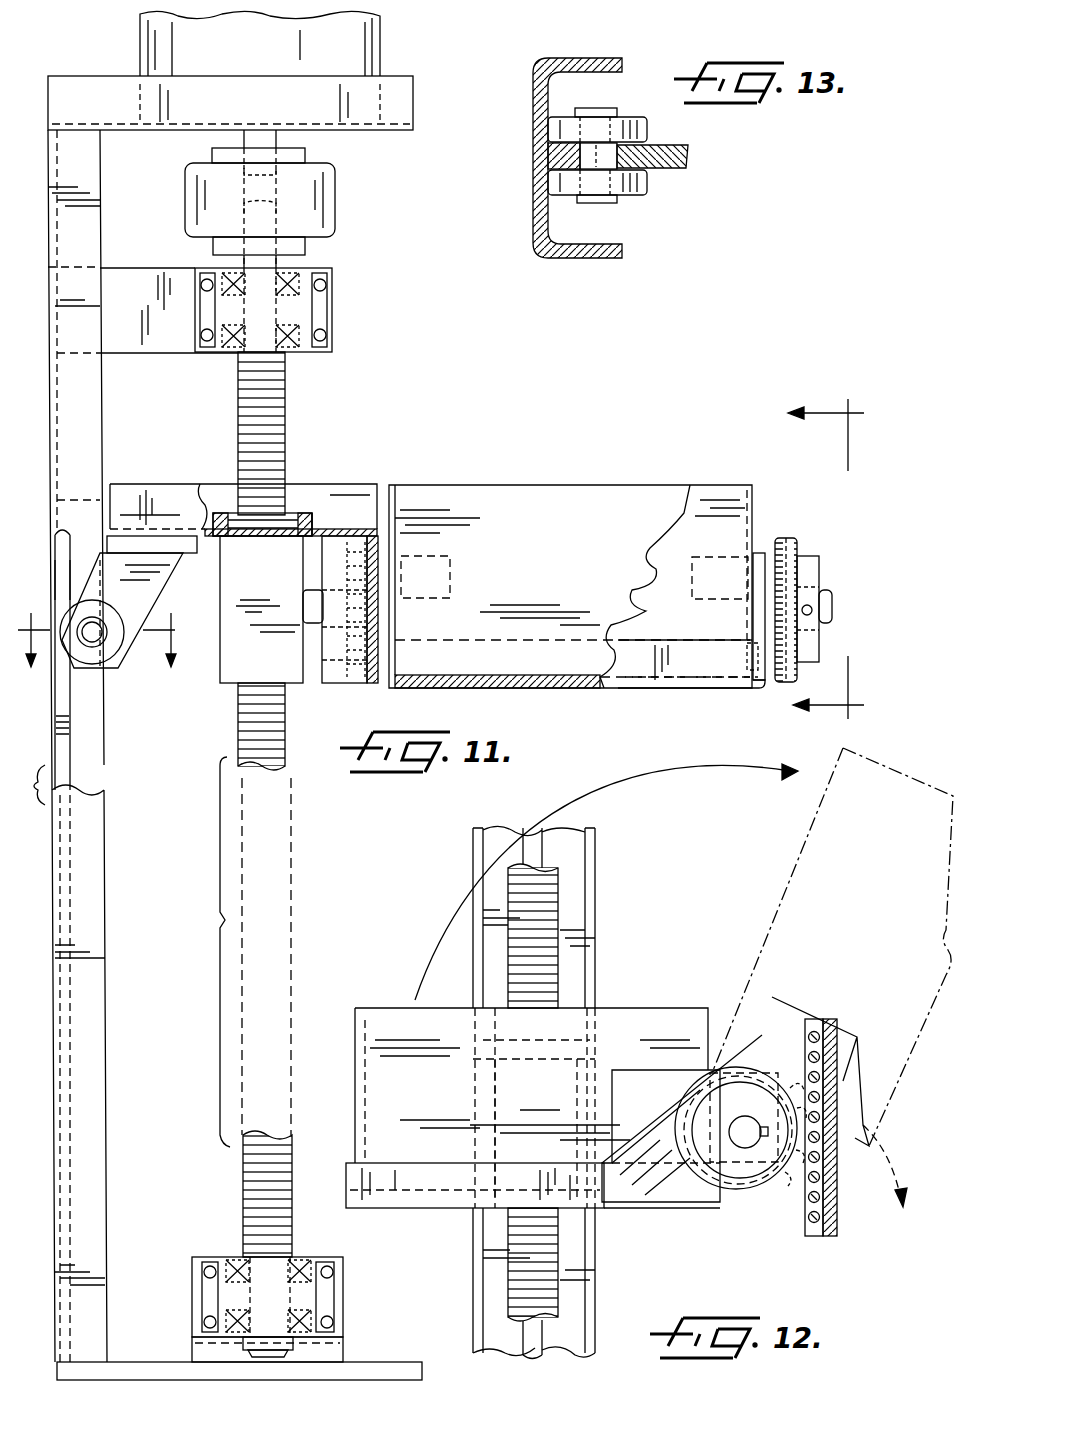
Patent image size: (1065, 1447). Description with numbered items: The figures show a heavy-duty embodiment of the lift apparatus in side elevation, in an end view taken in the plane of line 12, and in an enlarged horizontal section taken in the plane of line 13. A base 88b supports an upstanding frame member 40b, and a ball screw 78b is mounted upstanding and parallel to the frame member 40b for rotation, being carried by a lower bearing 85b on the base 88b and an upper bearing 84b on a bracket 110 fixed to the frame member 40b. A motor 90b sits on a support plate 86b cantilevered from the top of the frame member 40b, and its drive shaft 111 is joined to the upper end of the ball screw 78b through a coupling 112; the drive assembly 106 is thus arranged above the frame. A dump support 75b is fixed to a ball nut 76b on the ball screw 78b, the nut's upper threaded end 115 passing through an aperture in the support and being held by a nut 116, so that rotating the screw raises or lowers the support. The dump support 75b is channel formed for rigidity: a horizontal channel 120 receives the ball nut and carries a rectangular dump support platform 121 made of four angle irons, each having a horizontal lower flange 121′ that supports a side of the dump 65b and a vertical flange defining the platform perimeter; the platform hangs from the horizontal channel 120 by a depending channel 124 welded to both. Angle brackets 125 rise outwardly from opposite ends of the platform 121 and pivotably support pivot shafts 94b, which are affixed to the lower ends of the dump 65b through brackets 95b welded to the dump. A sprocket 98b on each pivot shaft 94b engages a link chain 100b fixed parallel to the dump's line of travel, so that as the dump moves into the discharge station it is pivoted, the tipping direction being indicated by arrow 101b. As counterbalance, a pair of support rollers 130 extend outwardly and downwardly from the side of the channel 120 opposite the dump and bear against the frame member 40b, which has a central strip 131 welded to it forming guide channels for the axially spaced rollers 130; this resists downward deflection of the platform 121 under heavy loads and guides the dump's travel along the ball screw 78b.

In FIG. 11, the motor 90b is at (140, 33).
In FIG. 11, the support plate 86b is at (225, 92).
In FIG. 11, the drive shaft 111 is at (244, 136).
In FIG. 11, the coupling 112 is at (193, 196).
In FIG. 11, the drive assembly 106 is at (390, 243).
In FIG. 11, the upper bearing 84b is at (295, 326).
In FIG. 11, the bracket 110 is at (137, 354).
In FIG. 11, the ball screw 78b is at (280, 392).
In FIG. 12, the ball screw 78b is at (555, 906).
In FIG. 11, the horizontal channel 120 is at (170, 505).
In FIG. 13, the horizontal channel 120 is at (688, 156).
In FIG. 12, the horizontal channel 120 is at (482, 1068).
In FIG. 11, the upper threaded end 115 is at (243, 514).
In FIG. 11, the nut 116 is at (303, 514).
In FIG. 12, the nut 116 is at (580, 1022).
In FIG. 11, the dump support 75b is at (375, 522).
In FIG. 11, the dump 65b is at (590, 488).
In FIG. 12, the dump 65b is at (373, 1016).
In FIG. 11, the depending channel 124 is at (398, 565).
In FIG. 11, the brackets 95b is at (415, 590).
In FIG. 12, the brackets 95b is at (667, 1062).
In FIG. 11, the pivot shafts 94b is at (318, 612).
In FIG. 12, the pivot shafts 94b is at (752, 1148).
In FIG. 11, the ball nut 76b is at (222, 672).
In FIG. 12, the ball nut 76b is at (492, 1116).
In FIG. 11, the sprocket 98b is at (338, 682).
In FIG. 12, the sprocket 98b is at (780, 1187).
In FIG. 11, the angle brackets 125 is at (365, 684).
In FIG. 12, the angle brackets 125 is at (648, 1140).
In FIG. 11, the dump support platform 121 is at (640, 688).
In FIG. 12, the dump support platform 121 is at (436, 1185).
In FIG. 11, the lower flange 121′ is at (418, 686).
In FIG. 12, the lower flange 121′ is at (377, 1212).
In FIG. 11, the support rollers 130 is at (112, 672).
In FIG. 13, the support rollers 130 is at (552, 126).
In FIG. 11, the central strip 131 is at (70, 727).
In FIG. 13, the central strip 131 is at (549, 158).
In FIG. 11, the frame member 40b is at (92, 1012).
In FIG. 13, the frame member 40b is at (535, 82).
In FIG. 12, the frame member 40b is at (473, 882).
In FIG. 11, the lower bearing 85b is at (238, 1255).
In FIG. 11, the base 88b is at (146, 1363).
In FIG. 11, the line 12— 12 is at (845, 560).
In FIG. 11, the line 13— 13 is at (105, 624).
In FIG. 12, the link chain 100b is at (808, 1040).
In FIG. 12, the pivot arrow 101b is at (832, 1205).